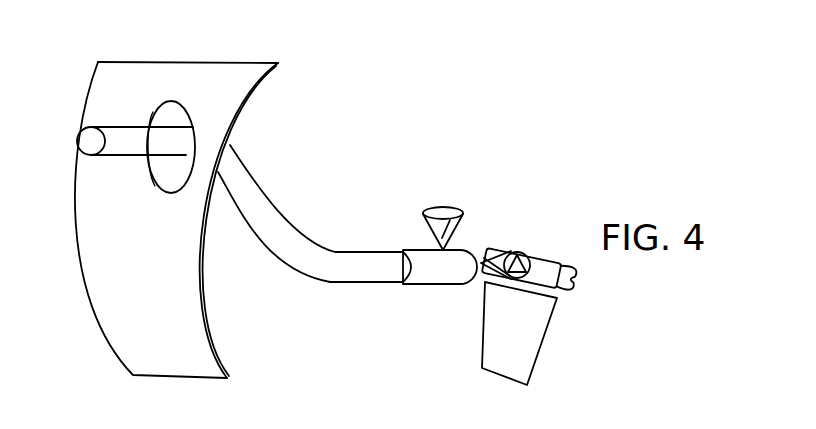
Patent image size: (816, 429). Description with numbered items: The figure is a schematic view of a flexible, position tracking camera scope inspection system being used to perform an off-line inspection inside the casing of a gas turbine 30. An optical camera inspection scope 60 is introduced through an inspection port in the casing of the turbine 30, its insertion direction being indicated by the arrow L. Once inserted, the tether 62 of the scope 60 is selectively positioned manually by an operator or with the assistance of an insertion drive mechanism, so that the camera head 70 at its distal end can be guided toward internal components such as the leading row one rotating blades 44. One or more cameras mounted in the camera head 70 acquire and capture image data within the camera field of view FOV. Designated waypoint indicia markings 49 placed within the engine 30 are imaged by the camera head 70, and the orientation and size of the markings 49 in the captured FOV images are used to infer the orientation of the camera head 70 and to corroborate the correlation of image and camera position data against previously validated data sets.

The gas turbine 30 is at (100, 54).
The direction of insertion L is at (136, 170).
The optical camera inspection scope 60 is at (264, 177).
The tether 62 is at (287, 258).
The camera head 70 is at (442, 284).
The field of view FOV is at (490, 250).
The indicia markings 49 is at (527, 253).
The Row 1 rotating blades 44 is at (569, 317).